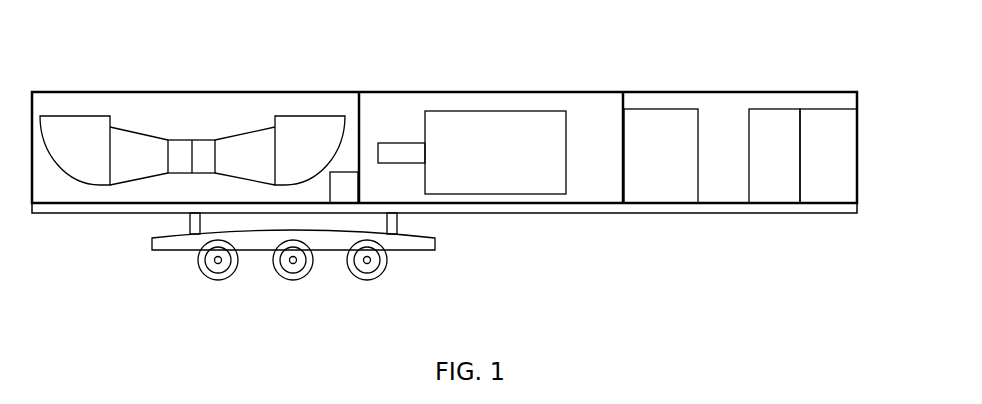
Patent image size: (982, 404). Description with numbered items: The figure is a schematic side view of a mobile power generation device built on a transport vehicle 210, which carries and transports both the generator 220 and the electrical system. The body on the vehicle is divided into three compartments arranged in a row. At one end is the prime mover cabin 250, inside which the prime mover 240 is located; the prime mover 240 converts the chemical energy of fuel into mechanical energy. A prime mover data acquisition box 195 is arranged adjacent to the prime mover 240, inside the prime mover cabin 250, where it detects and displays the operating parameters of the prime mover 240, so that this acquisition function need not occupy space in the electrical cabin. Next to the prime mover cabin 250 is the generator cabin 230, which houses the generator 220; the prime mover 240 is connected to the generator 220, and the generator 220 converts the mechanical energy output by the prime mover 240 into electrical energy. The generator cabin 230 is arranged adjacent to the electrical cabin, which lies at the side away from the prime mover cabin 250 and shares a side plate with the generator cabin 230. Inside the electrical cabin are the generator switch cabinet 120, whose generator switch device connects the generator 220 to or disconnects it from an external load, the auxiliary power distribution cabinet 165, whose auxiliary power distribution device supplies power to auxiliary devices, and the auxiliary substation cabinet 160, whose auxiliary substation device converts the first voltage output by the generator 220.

The generator switch cabinet 120 is at (646, 165).
The auxiliary substation cabinet 160 is at (815, 125).
The auxiliary power distribution cabinet 165 is at (772, 175).
The prime mover data acquisition box 195 is at (347, 192).
The transport vehicle 210 is at (247, 207).
The generator 220 is at (485, 147).
The generator cabin 230 is at (477, 102).
The prime mover 240 is at (158, 147).
The prime mover cabin 250 is at (288, 97).